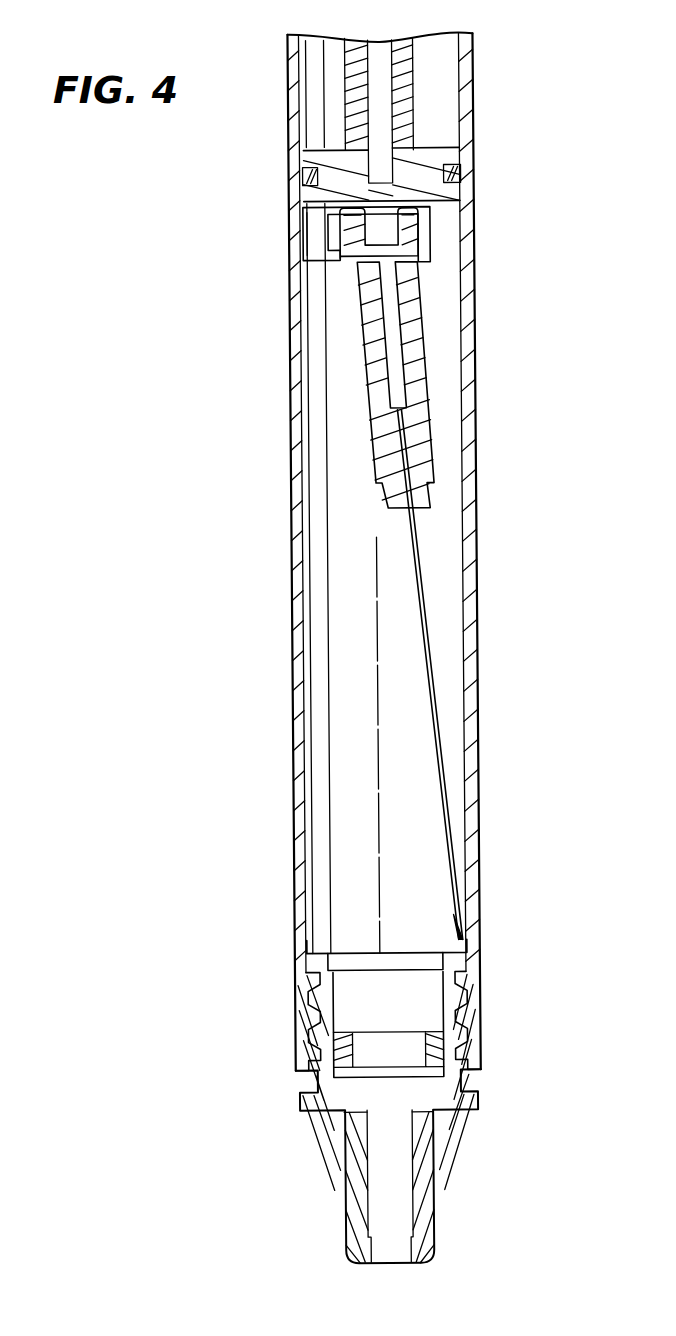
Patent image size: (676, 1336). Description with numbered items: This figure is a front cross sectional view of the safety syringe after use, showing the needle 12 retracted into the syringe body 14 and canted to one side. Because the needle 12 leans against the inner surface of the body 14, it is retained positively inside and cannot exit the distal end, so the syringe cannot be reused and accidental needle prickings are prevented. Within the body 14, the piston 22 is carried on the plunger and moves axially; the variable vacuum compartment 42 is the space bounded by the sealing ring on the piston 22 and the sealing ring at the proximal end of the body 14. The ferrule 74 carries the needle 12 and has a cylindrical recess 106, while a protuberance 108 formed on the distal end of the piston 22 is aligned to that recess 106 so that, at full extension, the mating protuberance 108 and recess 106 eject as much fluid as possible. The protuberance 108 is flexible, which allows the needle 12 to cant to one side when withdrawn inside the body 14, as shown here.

The needle 12 is at (433, 707).
The body 14 is at (472, 555).
The piston 22 is at (434, 158).
The variable vacuum compartment 42 is at (434, 92).
The ferrule 74 is at (414, 448).
The recess 106 is at (362, 262).
The protuberance 108 is at (383, 230).